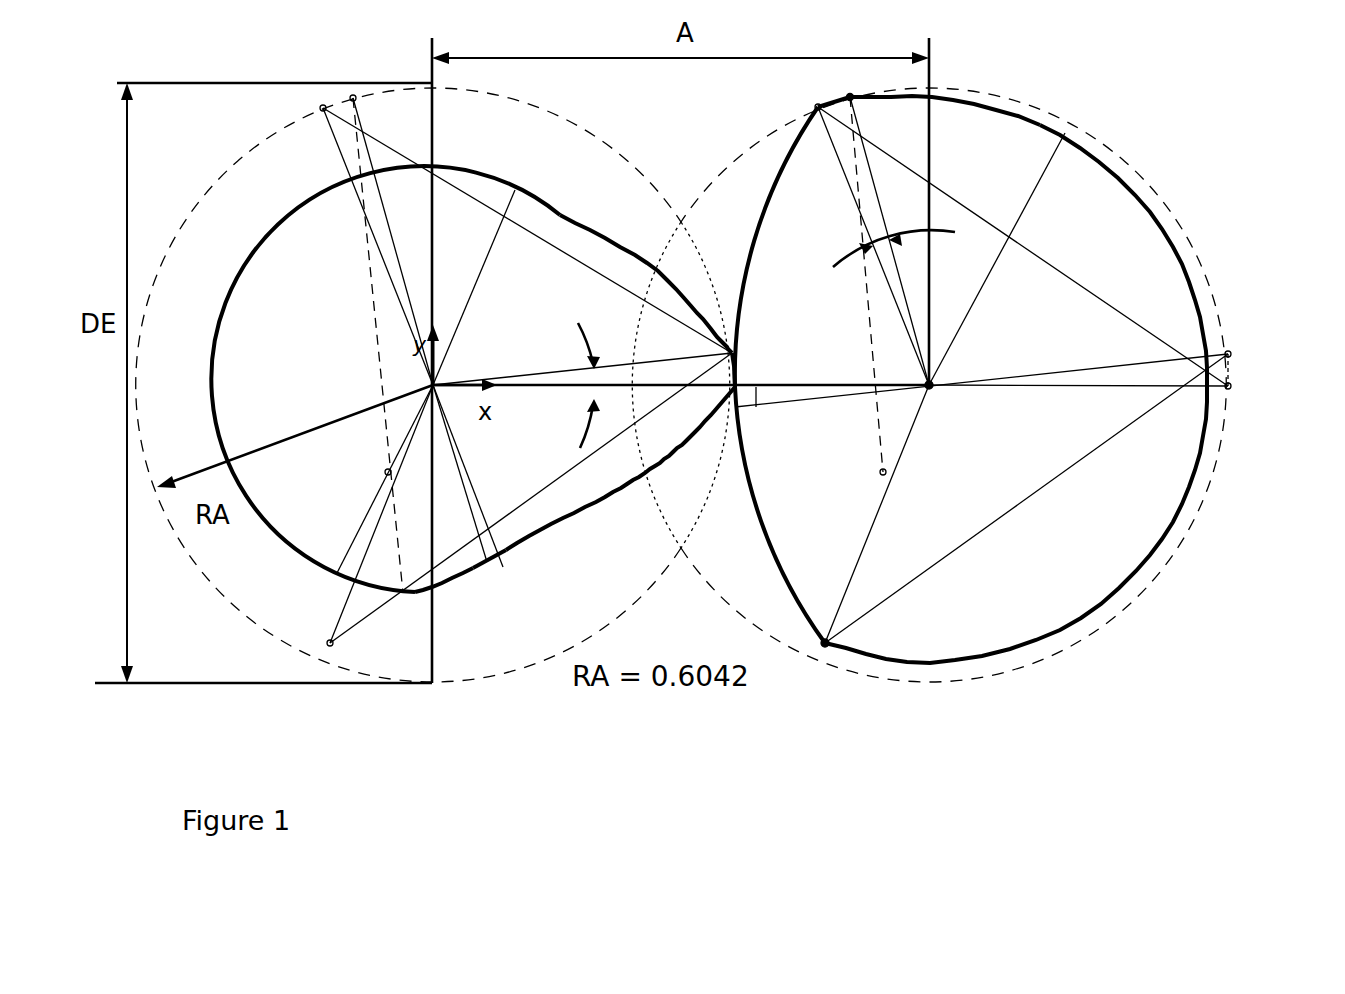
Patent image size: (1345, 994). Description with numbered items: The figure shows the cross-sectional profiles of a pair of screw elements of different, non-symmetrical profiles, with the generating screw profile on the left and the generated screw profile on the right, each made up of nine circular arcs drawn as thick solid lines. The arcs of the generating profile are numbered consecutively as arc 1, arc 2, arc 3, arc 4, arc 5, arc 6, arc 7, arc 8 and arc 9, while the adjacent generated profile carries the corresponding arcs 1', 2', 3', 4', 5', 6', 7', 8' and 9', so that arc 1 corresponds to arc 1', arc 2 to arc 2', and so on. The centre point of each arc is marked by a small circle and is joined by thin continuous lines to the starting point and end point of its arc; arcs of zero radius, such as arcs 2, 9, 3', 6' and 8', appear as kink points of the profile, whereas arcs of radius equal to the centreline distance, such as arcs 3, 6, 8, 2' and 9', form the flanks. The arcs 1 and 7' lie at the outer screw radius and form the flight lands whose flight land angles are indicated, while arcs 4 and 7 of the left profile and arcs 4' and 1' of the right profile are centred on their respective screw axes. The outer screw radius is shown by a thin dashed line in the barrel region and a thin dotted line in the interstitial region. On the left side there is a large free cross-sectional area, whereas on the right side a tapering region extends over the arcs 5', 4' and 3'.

The circular arc 1 is at (526, 559).
The circular arc 2 is at (718, 355).
The circular arc 3 is at (646, 284).
The circular arc 4 is at (462, 379).
The circular arc 5 is at (385, 572).
The circular arc 6 is at (444, 570).
The circular arc 7 is at (469, 477).
The circular arc 8 is at (620, 468).
The circular arc 9 is at (719, 380).
The circular arc 1' is at (981, 380).
The circular arc 2' is at (780, 515).
The circular arc 3' is at (838, 628).
The circular arc 4' is at (1016, 394).
The circular arc 5' is at (945, 119).
The circular arc 6' is at (840, 115).
The circular arc 7' is at (1063, 168).
The circular arc 8' is at (830, 121).
The circular arc 9' is at (776, 247).